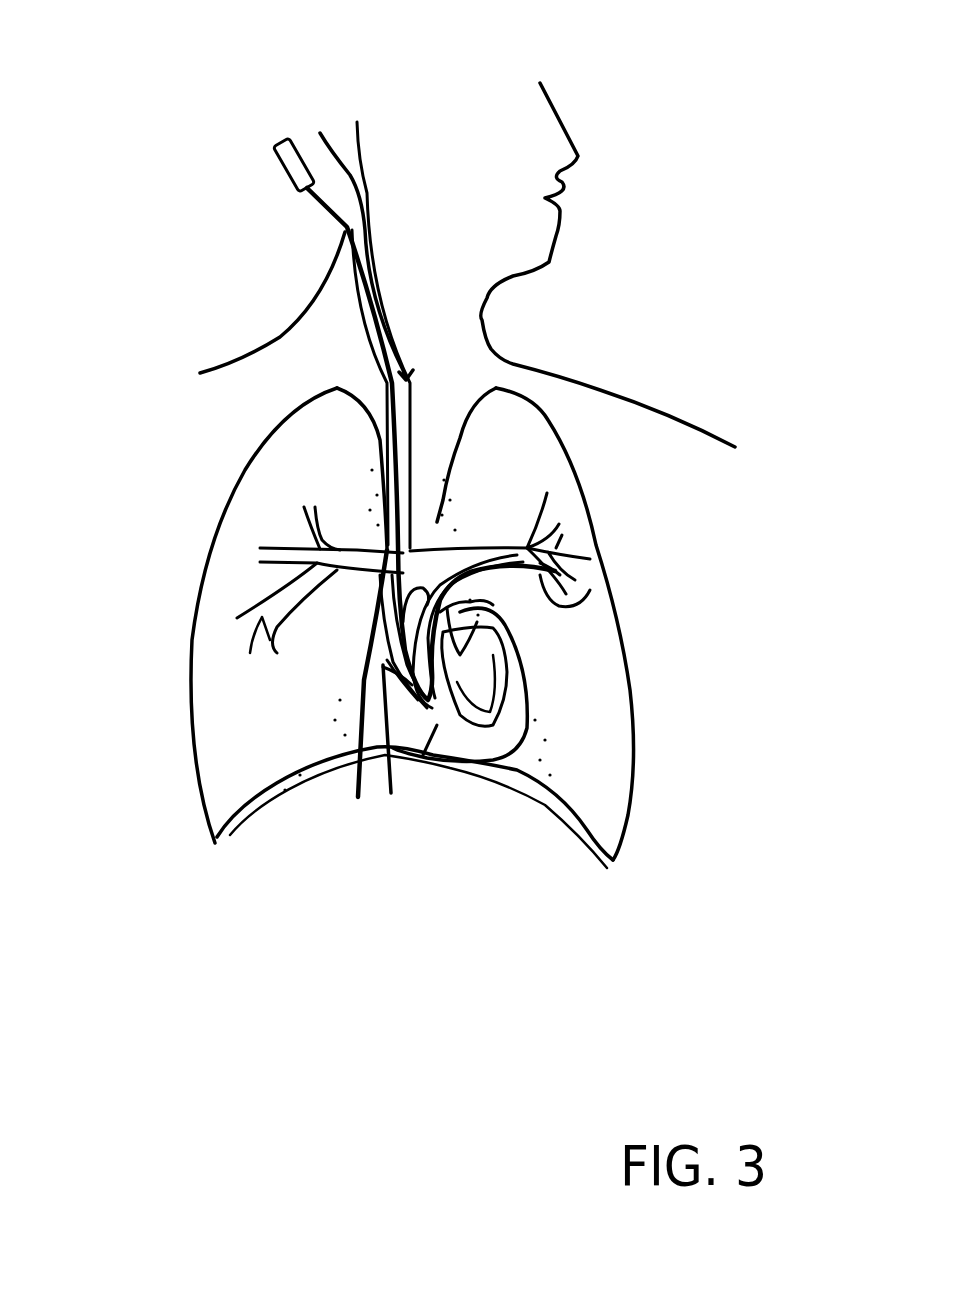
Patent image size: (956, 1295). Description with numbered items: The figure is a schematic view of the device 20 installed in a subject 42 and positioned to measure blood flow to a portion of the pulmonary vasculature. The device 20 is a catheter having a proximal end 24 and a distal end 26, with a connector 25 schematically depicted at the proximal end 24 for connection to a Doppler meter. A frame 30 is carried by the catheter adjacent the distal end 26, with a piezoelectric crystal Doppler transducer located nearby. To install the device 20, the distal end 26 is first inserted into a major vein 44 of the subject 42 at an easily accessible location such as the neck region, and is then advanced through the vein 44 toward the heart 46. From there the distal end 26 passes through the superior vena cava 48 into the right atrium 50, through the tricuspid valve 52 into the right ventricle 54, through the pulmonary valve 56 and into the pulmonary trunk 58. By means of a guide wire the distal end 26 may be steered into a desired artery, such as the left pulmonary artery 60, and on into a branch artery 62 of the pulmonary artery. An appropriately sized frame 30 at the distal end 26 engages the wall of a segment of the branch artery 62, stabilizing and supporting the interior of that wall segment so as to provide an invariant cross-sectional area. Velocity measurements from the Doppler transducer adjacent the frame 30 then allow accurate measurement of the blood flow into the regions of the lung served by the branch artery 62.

The device 20 is at (279, 102).
The proximal end 24 is at (307, 200).
The connector 25 is at (285, 170).
The distal end 26 is at (555, 571).
The frame 30 is at (559, 606).
The subject 42 is at (568, 88).
The major vein 44 is at (358, 322).
The heart 46 is at (457, 767).
The superior vena cava 48 is at (365, 638).
The right atrium 50 is at (383, 667).
The tricuspid valve 52 is at (393, 663).
The right ventricle 54 is at (435, 727).
The pulmonary valve 56 is at (387, 660).
The pulmonary trunk 58 is at (440, 610).
The left pulmonary artery 60 is at (496, 544).
The branch artery 62 is at (535, 563).